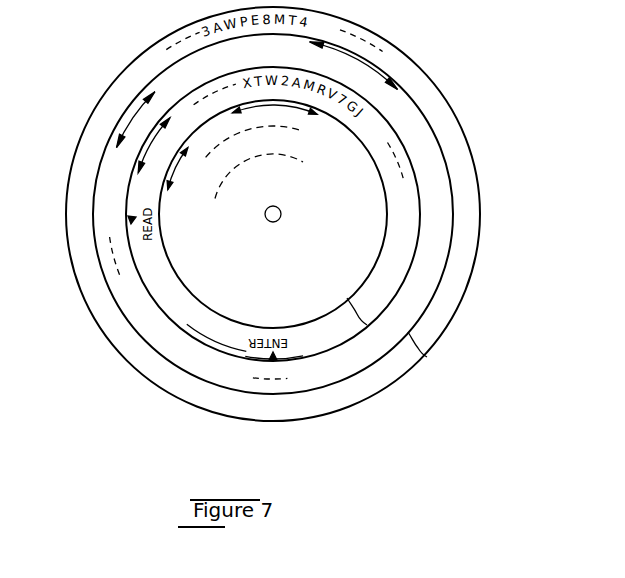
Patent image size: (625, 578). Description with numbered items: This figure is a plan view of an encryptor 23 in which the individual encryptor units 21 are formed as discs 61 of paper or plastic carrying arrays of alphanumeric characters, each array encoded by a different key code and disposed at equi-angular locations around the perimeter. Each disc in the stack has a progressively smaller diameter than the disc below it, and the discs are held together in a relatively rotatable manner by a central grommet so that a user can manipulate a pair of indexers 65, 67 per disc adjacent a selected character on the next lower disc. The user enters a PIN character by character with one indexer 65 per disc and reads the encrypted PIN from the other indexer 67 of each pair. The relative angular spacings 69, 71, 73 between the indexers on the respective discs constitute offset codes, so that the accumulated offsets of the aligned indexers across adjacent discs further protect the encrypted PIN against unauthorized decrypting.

The encryptor unit 21 is at (346, 299).
The encryptor 23 is at (504, 144).
The disc 61 is at (399, 281).
The indexer 65 is at (306, 42).
The indexer 67 is at (412, 74).
The relative angular spacing 69 is at (326, 73).
The relative angular spacing 71 is at (153, 285).
The relative angular spacing 73 is at (268, 120).